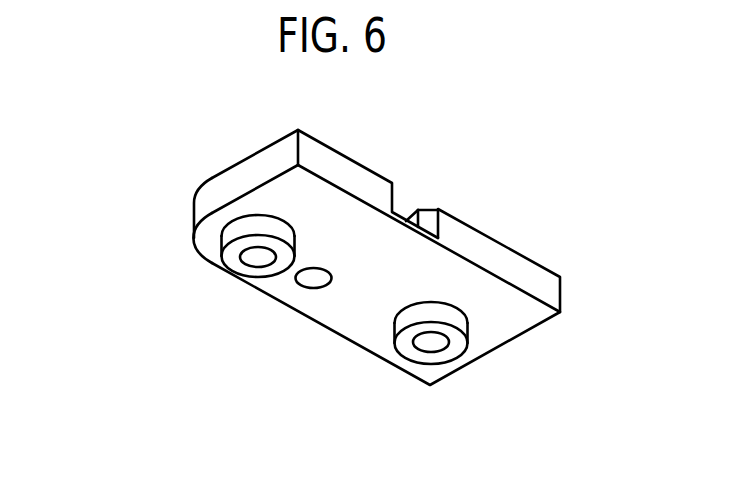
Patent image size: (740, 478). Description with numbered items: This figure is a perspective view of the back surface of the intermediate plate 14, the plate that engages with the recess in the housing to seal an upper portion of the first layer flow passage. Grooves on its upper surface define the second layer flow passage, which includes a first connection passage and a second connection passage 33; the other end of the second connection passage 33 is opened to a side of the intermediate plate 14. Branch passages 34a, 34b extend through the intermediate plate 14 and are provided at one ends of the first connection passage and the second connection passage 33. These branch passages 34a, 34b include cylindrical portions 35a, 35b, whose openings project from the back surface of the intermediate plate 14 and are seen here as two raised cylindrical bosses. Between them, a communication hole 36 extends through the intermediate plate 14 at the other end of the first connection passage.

The intermediate plate 14 is at (220, 174).
The second connection passage 33 is at (392, 199).
The branch passage 34a is at (434, 364).
The branch passage 34b is at (262, 278).
The cylindrical portion 35a is at (420, 356).
The cylindrical portion 35b is at (232, 262).
The communication hole 36 is at (313, 290).